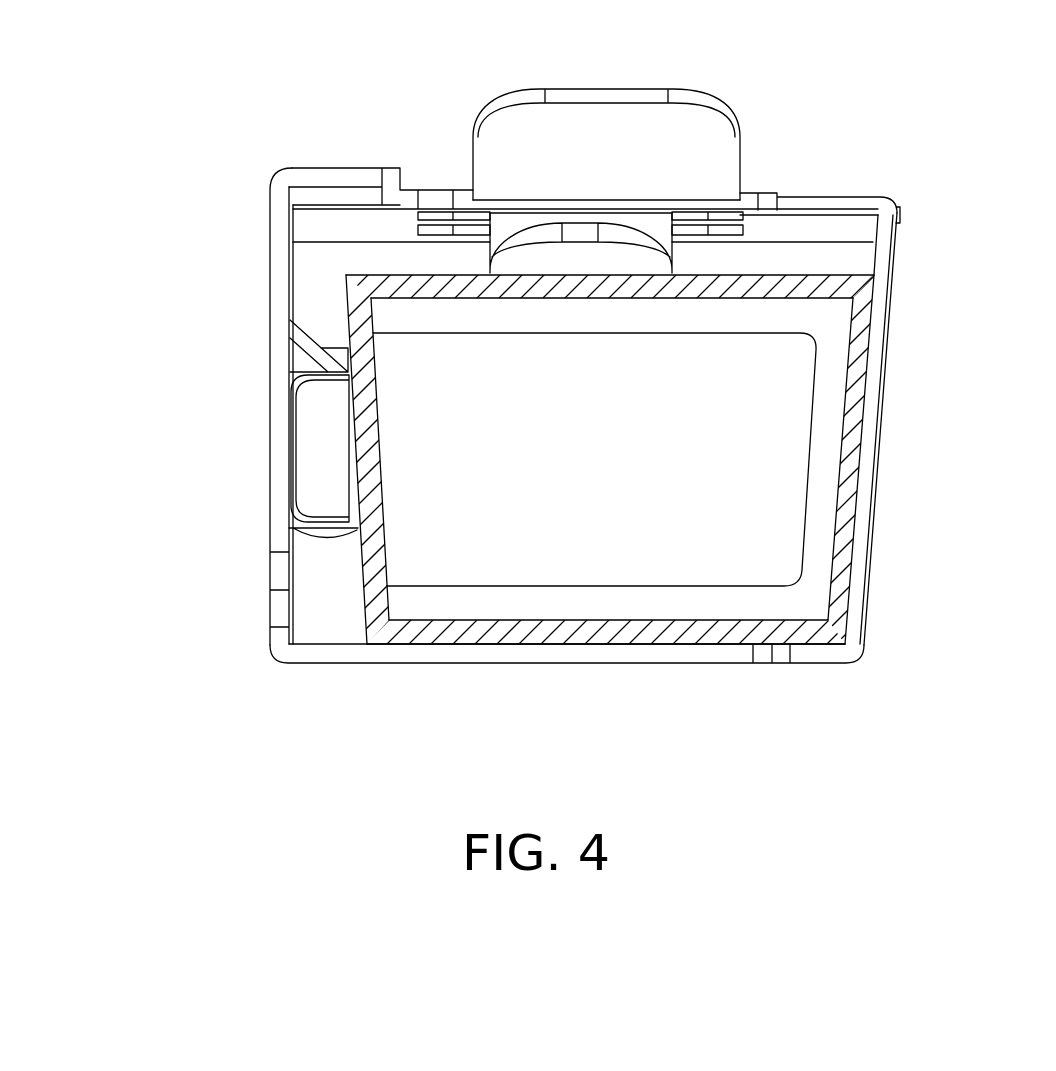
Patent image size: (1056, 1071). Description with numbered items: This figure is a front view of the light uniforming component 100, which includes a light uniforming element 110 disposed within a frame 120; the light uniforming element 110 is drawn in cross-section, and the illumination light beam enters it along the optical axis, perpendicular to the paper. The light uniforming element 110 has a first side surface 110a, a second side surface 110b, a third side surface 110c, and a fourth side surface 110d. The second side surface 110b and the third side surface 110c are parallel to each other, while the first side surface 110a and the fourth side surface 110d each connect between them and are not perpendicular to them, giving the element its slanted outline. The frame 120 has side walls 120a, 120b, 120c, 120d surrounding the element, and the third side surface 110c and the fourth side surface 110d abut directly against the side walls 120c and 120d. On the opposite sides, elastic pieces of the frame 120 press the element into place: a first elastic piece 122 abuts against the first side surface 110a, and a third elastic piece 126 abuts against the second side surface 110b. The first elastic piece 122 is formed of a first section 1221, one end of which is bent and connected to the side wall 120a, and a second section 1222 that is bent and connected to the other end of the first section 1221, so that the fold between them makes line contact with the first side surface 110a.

The light uniforming component 100 is at (1046, 692).
The light uniforming element 110 is at (643, 418).
The first side surface 110a is at (363, 580).
The second side surface 110b is at (777, 277).
The third side surface 110c is at (583, 644).
The fourth side surface 110d is at (855, 500).
The frame 120 is at (581, 422).
The side wall 120a is at (272, 432).
The side wall 120b is at (842, 204).
The side wall 120c is at (497, 652).
The side wall 120d is at (867, 420).
The first elastic piece 122 is at (217, 411).
The first section 1221 is at (295, 355).
The second section 1222 is at (317, 405).
The third elastic piece 126 is at (608, 258).